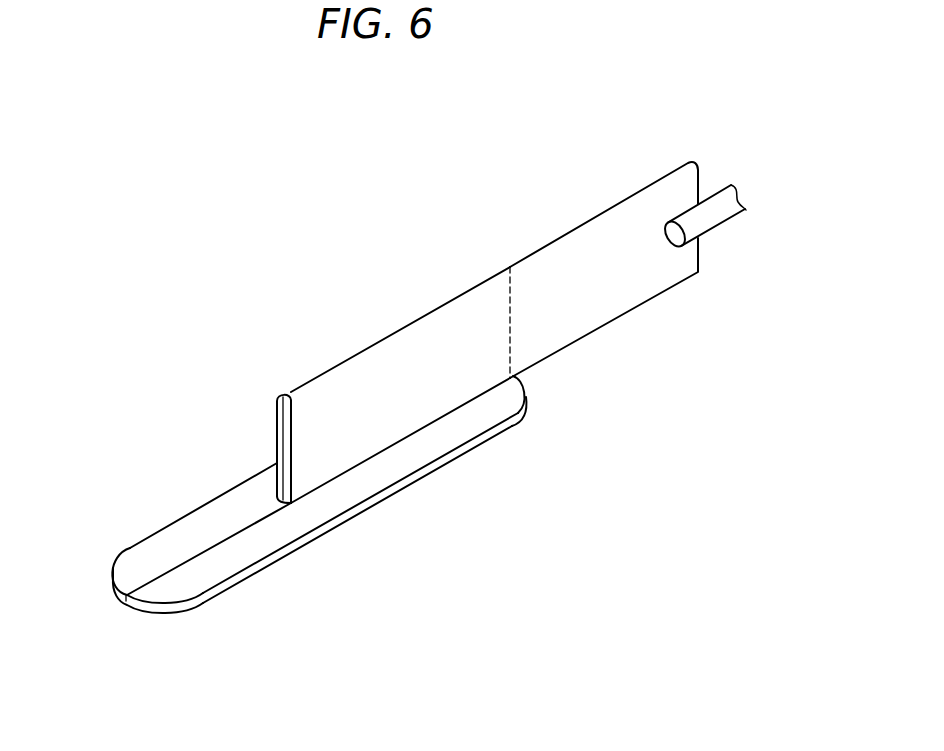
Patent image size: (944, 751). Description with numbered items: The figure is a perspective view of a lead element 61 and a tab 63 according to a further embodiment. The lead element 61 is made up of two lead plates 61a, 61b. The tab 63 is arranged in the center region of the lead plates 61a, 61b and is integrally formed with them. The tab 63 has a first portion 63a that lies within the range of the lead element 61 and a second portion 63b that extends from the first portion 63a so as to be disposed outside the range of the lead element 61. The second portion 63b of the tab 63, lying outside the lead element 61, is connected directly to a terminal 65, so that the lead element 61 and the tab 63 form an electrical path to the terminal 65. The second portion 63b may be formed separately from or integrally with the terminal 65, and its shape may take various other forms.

The lead element 61 is at (282, 497).
The lead plate 61a is at (220, 512).
The lead plate 61b is at (257, 543).
The tab 63 is at (485, 332).
The first portion 63a is at (328, 382).
The second portion 63b is at (613, 217).
The terminal 65 is at (717, 226).